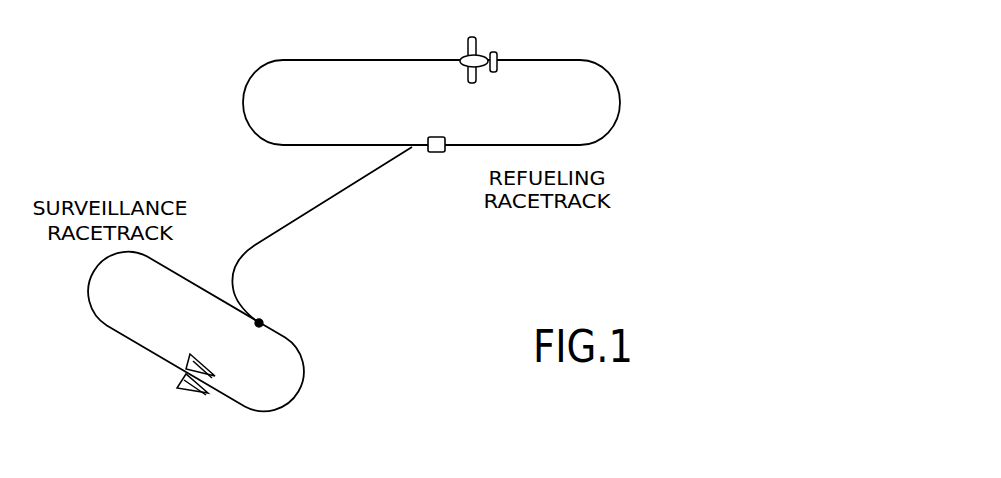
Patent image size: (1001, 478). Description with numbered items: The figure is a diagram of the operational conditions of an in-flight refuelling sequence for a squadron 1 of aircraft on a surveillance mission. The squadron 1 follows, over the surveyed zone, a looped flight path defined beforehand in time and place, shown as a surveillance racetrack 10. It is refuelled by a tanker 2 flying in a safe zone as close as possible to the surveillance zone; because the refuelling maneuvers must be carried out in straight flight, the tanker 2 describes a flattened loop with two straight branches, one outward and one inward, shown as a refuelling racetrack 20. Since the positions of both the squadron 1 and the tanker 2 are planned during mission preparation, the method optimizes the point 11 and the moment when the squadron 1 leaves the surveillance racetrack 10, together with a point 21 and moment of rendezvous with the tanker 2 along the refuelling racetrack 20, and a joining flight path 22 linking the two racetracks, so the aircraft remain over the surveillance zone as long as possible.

The squadron of aircraft 1 is at (205, 393).
The tanker 2 is at (482, 58).
The surveillance racetrack 10 is at (305, 377).
The point 11 is at (263, 320).
The refuelling racetrack 20 is at (613, 80).
The point of rendezvous 21 is at (437, 152).
The joining flight path 22 is at (313, 210).